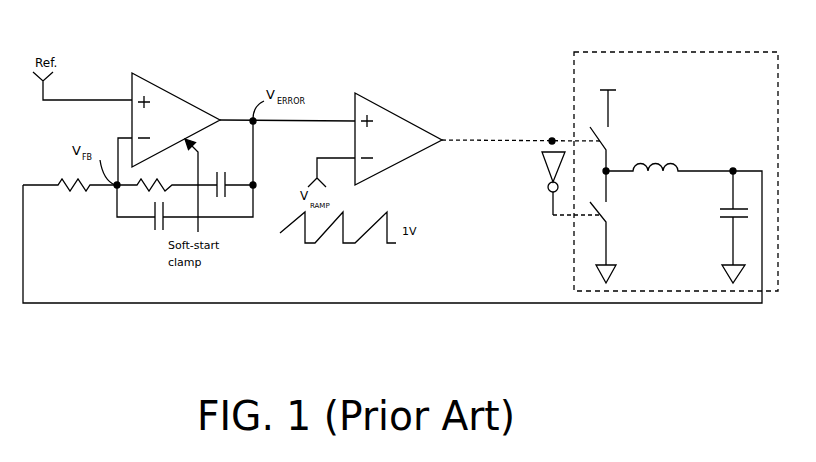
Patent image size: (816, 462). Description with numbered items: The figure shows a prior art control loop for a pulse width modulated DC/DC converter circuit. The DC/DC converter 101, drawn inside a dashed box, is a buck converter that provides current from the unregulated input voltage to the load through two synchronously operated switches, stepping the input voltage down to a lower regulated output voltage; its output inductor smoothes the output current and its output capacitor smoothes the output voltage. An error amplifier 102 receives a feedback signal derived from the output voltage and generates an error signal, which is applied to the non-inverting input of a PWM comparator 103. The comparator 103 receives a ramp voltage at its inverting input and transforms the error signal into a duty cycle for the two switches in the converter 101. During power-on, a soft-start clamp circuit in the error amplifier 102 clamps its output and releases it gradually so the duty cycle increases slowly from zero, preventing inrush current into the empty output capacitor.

The DC/DC converter 101 is at (606, 52).
The error amplifier 102 is at (166, 90).
The PWM comparator 103 is at (400, 117).